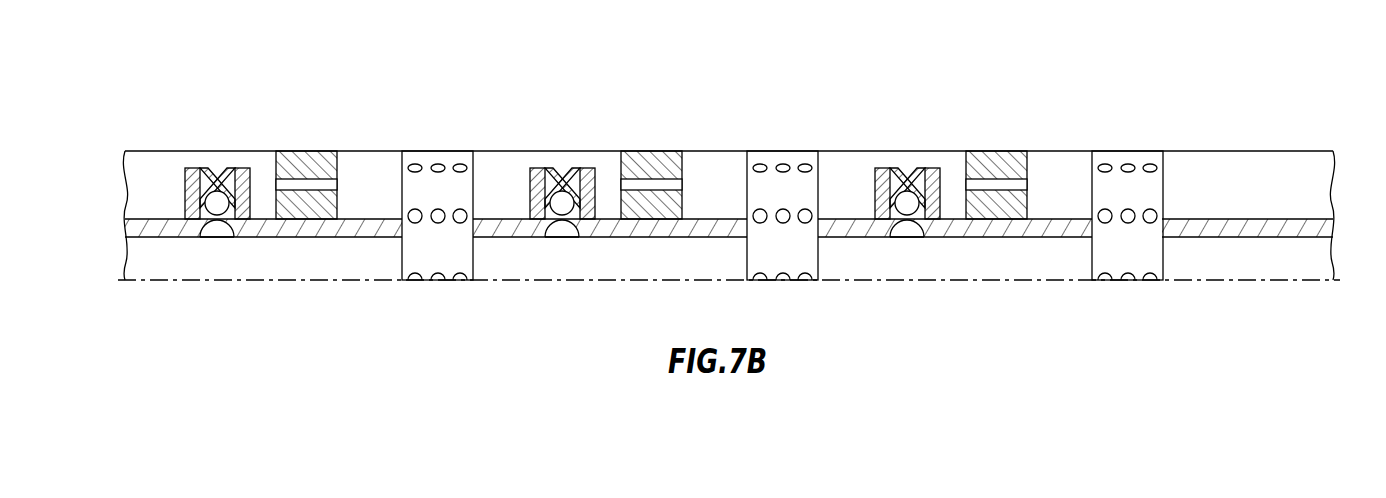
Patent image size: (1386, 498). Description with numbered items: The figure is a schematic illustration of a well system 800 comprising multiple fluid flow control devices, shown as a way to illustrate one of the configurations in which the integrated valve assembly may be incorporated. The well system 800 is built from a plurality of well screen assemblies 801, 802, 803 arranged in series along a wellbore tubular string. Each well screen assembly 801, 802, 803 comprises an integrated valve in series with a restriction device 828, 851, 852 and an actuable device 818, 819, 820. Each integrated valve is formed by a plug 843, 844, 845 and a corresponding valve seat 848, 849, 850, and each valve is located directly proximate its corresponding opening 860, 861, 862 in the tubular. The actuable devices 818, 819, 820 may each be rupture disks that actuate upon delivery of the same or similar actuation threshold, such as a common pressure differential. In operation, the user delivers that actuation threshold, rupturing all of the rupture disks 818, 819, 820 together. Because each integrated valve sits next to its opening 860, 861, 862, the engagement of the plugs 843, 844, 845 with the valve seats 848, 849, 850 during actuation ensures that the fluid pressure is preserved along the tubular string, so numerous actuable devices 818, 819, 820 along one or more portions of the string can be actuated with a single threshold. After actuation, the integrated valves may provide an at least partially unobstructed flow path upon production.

The well system 800 is at (146, 92).
The well screen assembly 801 is at (364, 134).
The well screen assembly 802 is at (762, 166).
The well screen assembly 803 is at (1107, 166).
The actuable device 818 is at (217, 231).
The actuable device 819 is at (579, 281).
The actuable device 820 is at (924, 281).
The restriction device 828 is at (293, 155).
The plug 843 is at (209, 189).
The plug 844 is at (558, 147).
The plug 845 is at (903, 147).
The valve seat 848 is at (252, 176).
The valve seat 849 is at (592, 145).
The valve seat 850 is at (937, 145).
The restriction device 851 is at (658, 147).
The restriction device 852 is at (1003, 147).
The opening 860 is at (193, 256).
The opening 861 is at (523, 289).
The opening 862 is at (868, 289).